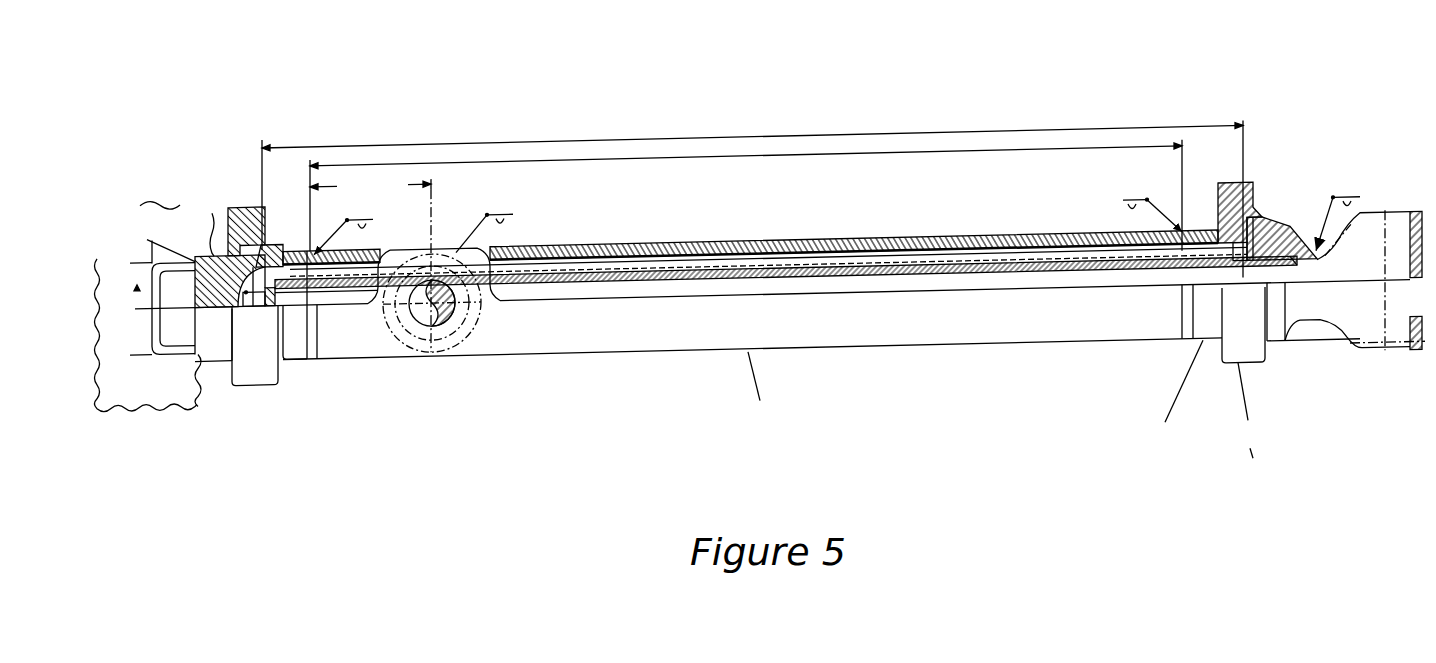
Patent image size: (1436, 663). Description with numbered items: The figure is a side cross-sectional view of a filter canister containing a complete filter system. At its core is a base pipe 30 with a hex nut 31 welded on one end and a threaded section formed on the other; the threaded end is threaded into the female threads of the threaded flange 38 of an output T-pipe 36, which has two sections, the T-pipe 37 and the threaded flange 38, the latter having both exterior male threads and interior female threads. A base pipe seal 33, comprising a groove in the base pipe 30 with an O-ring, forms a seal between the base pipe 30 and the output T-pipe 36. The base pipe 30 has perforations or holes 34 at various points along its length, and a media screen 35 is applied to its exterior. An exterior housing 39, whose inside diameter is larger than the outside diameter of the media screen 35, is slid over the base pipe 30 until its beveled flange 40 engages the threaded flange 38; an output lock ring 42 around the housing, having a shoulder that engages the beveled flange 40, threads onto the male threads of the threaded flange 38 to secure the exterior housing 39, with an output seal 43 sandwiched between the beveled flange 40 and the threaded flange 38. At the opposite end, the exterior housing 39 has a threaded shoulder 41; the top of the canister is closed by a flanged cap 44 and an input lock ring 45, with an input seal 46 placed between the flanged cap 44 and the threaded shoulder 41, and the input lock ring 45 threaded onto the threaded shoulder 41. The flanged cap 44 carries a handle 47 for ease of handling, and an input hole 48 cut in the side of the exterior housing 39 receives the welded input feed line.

The base pipe 30 is at (535, 337).
The hex nut 31 is at (203, 221).
The base pipe seal 33 is at (1297, 288).
The perforations or holes 34 is at (893, 298).
The media screen 35 is at (788, 274).
The output T-pipe 36 is at (1281, 248).
The T-pipe 37 is at (1363, 378).
The threaded flange 38 is at (1277, 364).
The exterior housing 39 is at (893, 250).
The beveled flange 40 is at (1221, 253).
The threaded shoulder 41 is at (313, 257).
The output lock ring 42 is at (1244, 241).
The output seal 43 is at (1254, 254).
The flanged cap 44 is at (213, 361).
The input lock ring 45 is at (240, 206).
The input seal 46 is at (262, 258).
The handle 47 is at (178, 353).
The input hole 48 is at (453, 350).